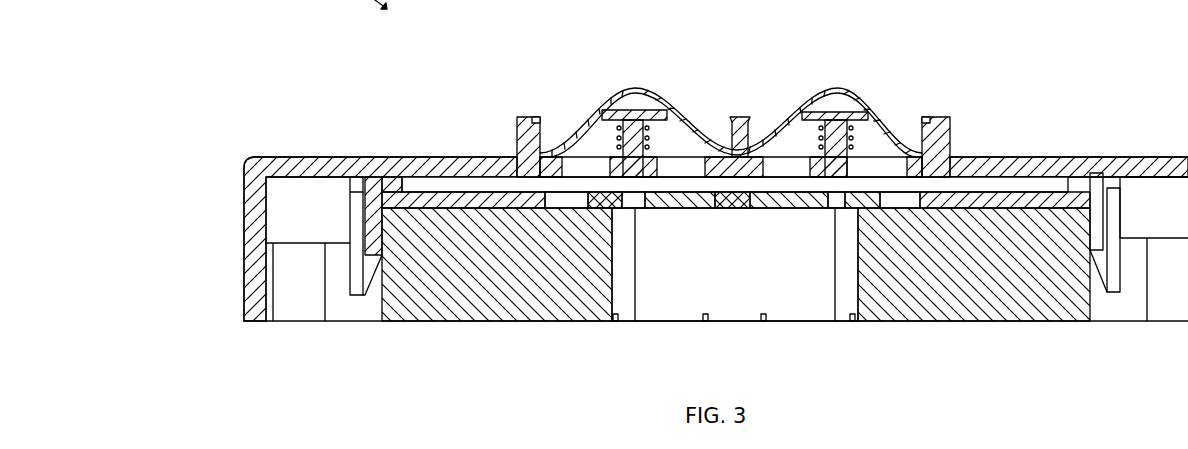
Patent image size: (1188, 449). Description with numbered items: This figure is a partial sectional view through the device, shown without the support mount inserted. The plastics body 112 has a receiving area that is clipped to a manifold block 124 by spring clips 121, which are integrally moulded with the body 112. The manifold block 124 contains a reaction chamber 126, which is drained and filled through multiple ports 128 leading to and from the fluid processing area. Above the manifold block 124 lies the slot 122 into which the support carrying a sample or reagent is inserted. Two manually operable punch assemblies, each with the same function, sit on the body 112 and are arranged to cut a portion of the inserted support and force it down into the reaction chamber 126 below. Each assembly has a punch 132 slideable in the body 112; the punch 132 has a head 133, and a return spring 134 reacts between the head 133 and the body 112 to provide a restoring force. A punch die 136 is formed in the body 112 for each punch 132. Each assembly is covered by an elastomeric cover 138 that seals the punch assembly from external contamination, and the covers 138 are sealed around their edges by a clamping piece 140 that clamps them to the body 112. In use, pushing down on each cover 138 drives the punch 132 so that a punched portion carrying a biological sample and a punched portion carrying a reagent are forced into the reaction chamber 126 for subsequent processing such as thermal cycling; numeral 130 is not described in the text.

The body 112 is at (363, 157).
The spring clips 121 is at (348, 265).
The slot 122 is at (468, 184).
The manifold block 124 is at (907, 292).
The reaction chamber 126 is at (705, 290).
The ports 128 is at (852, 323).
The dome switch 130 is at (642, 80).
The punch 132 is at (870, 153).
The head 133 is at (853, 130).
The return spring 134 is at (860, 140).
The punch die 136 is at (612, 200).
The elastomeric cover 138 is at (603, 97).
The clamping piece 140 is at (762, 113).